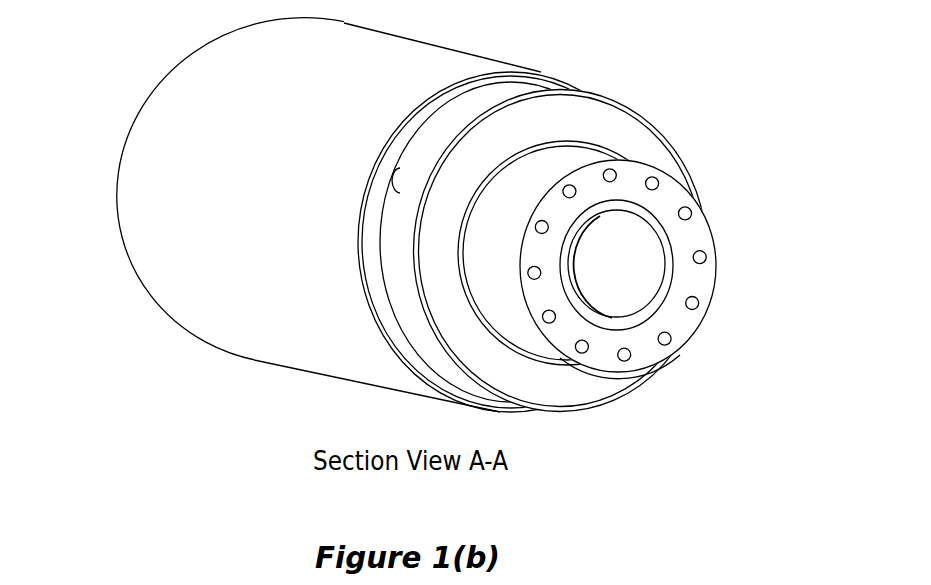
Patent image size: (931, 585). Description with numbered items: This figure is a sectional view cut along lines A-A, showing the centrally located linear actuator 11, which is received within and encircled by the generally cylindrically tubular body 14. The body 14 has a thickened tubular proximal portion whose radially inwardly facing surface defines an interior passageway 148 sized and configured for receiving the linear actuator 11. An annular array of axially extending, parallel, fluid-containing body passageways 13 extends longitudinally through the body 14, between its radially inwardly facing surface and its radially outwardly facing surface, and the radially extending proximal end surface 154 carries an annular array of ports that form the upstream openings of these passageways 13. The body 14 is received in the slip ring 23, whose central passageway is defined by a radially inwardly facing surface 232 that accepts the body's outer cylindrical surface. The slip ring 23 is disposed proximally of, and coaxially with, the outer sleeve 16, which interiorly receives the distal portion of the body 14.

The outer sleeve 16 is at (230, 305).
The slip ring 23 is at (533, 123).
The radially inwardly facing surface 232 is at (562, 143).
The body 14 is at (637, 177).
The proximal end surface 154 is at (638, 358).
The body passageways 13 is at (537, 226).
The interior passageway 148 is at (663, 293).
The linear actuator 11 is at (635, 275).